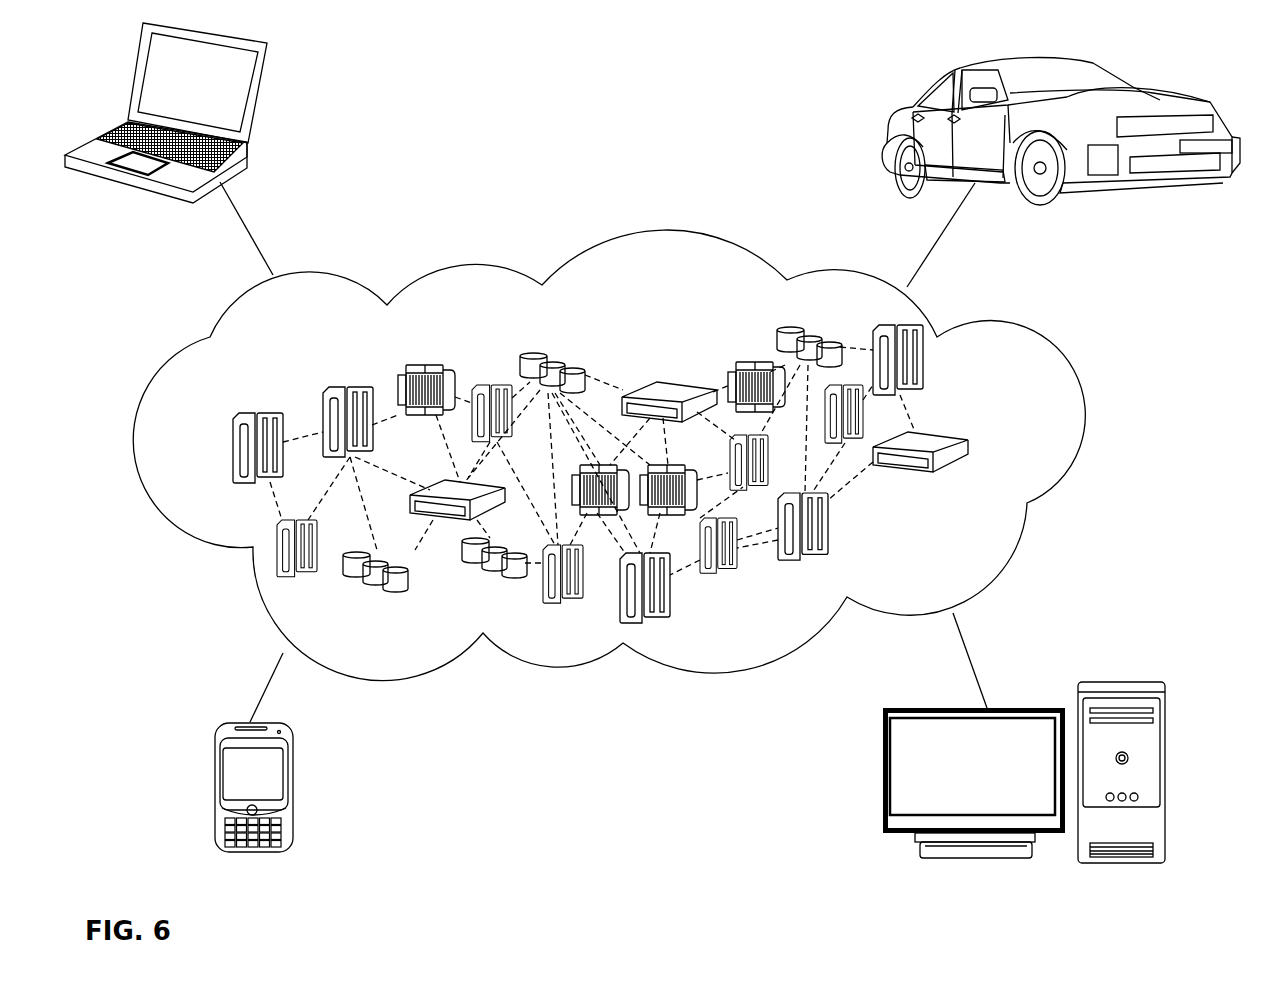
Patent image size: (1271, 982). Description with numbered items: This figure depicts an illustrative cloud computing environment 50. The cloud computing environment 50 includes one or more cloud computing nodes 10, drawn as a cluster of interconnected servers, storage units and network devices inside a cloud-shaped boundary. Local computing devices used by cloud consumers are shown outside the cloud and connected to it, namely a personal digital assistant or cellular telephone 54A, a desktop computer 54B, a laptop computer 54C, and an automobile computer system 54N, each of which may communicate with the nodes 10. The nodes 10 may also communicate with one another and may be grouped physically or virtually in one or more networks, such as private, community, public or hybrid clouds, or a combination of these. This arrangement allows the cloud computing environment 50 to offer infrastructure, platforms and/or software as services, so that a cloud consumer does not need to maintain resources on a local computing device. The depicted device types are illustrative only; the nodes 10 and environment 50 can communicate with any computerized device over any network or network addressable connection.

The cloud computing nodes 10 is at (1010, 450).
The cloud computing environment 50 is at (1040, 363).
The cellular telephone 54A is at (217, 792).
The desktop computer 54B is at (1127, 682).
The laptop computer 54C is at (260, 100).
The automobile computer system 54N is at (893, 107).